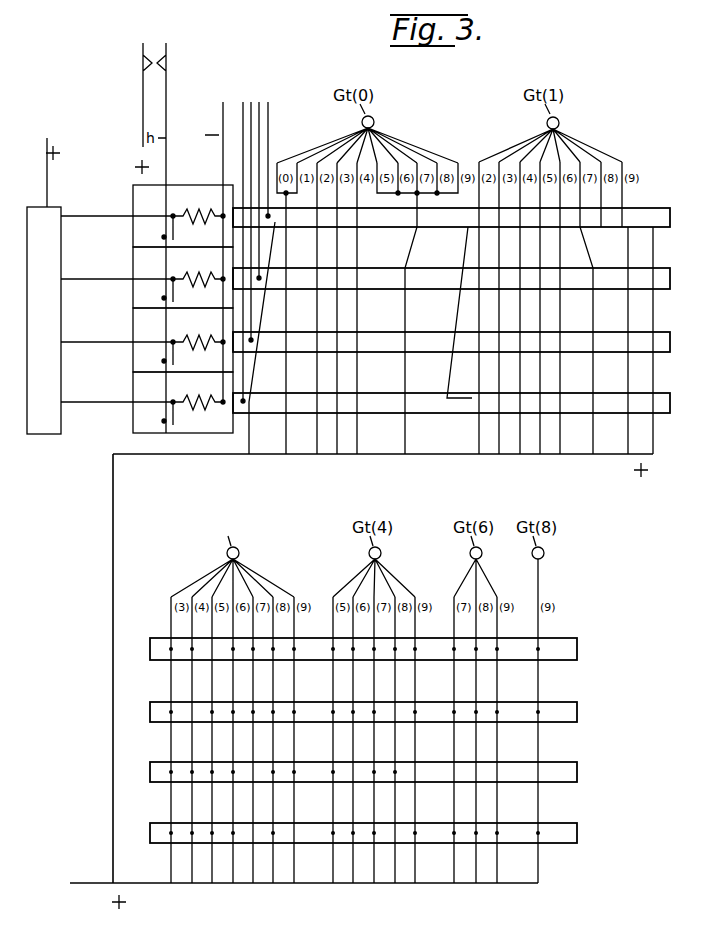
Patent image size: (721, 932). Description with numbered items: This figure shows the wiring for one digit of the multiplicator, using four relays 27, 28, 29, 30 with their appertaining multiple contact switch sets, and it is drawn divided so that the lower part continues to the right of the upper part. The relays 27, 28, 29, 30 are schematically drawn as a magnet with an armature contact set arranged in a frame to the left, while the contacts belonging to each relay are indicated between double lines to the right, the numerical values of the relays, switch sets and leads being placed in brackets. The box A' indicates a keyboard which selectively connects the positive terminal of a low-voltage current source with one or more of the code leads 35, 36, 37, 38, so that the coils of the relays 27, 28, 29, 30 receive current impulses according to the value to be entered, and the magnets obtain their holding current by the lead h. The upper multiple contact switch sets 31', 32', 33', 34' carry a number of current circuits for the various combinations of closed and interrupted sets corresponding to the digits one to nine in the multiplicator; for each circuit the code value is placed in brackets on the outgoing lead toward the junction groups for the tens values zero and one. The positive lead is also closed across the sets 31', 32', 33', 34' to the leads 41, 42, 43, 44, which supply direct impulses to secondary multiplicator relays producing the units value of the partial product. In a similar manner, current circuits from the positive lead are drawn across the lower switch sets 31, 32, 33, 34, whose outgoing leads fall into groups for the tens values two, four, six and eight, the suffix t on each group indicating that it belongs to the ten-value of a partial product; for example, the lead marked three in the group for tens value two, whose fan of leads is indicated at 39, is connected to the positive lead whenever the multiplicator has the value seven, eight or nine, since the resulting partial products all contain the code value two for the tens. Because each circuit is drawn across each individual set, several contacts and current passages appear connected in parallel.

The multiplicator relay 27 is at (140, 205).
The multiplicator relay 28 is at (140, 265).
The multiplicator relay 29 is at (140, 329).
The multiplicator relay 30 is at (140, 389).
The multiple contact switch set 31 is at (381, 636).
The multiple contact switch set 32 is at (381, 699).
The multiple contact switch set 33 is at (381, 760).
The multiple contact switch set 34 is at (381, 820).
The multiple contact switch set 31' is at (466, 204).
The multiple contact switch set 32' is at (466, 266).
The multiple contact switch set 33' is at (466, 329).
The multiple contact switch set 34' is at (466, 391).
The code lead 35 is at (84, 216).
The code lead 36 is at (84, 279).
The code lead 37 is at (84, 342).
The code lead 38 is at (84, 402).
The selector switch Gt(2) contact fan 39 is at (195, 581).
The lead 41 is at (268, 105).
The lead 42 is at (259, 125).
The lead 43 is at (251, 147).
The lead 44 is at (243, 155).
The keyboard box A' is at (44, 303).